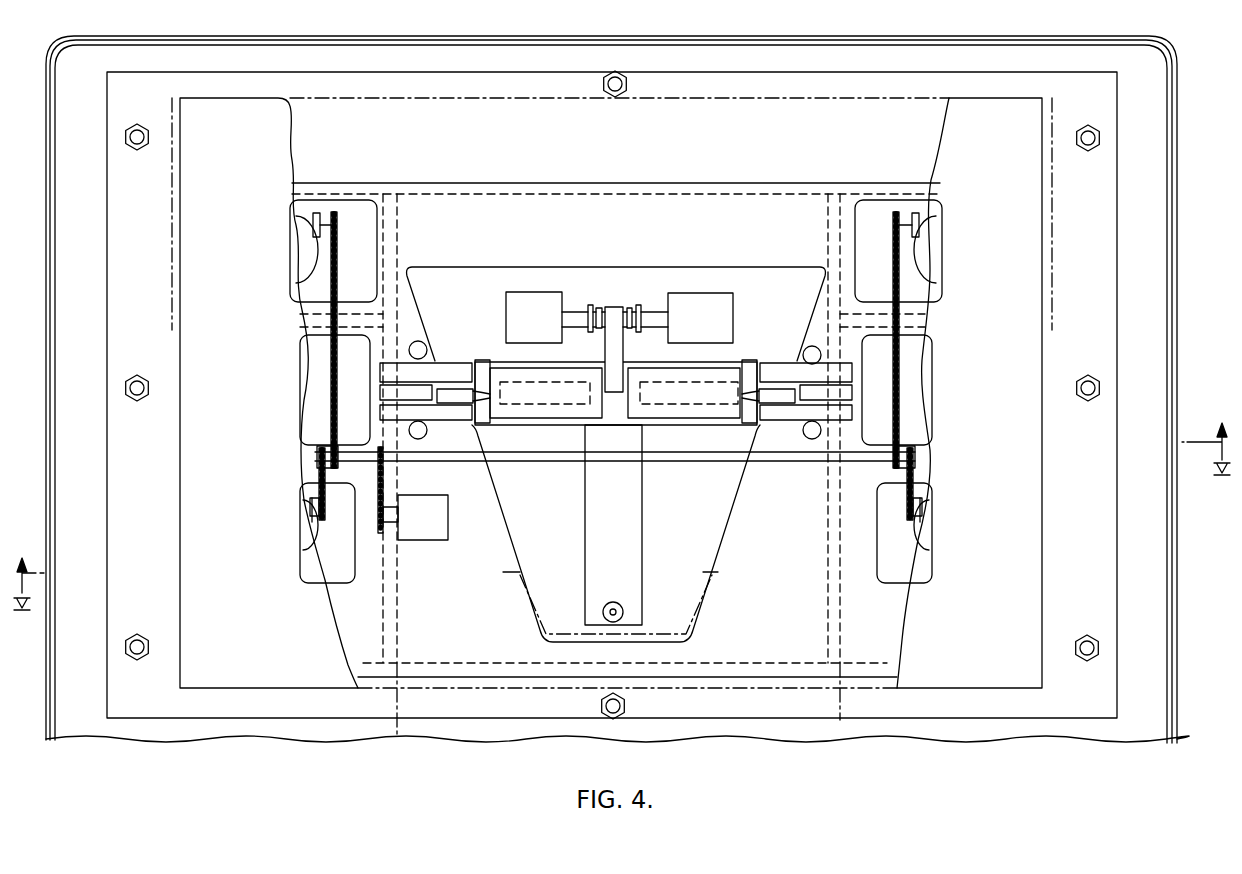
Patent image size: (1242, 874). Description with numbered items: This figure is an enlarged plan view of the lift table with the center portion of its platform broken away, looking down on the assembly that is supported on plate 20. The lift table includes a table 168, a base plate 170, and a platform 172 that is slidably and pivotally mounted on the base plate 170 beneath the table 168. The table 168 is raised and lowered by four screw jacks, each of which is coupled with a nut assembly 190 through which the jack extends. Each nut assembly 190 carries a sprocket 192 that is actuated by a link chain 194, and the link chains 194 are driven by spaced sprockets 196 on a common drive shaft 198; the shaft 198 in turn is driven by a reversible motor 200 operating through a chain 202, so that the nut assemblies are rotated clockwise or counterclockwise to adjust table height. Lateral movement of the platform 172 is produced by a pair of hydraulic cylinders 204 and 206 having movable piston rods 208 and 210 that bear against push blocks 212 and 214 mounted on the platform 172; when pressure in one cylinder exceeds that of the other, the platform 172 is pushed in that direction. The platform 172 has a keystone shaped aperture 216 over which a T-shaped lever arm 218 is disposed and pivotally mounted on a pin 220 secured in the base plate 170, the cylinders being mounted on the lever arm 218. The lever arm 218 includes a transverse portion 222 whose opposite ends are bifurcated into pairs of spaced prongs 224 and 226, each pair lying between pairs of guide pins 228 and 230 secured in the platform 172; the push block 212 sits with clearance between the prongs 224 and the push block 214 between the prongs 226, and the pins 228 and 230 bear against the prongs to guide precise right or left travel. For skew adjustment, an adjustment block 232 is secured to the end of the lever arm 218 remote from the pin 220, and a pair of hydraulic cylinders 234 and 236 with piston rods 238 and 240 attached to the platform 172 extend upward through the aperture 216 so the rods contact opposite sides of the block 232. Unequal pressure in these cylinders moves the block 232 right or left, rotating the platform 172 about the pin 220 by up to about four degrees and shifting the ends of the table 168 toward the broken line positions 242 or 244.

The plate 20 is at (1128, 263).
The table 168 is at (262, 112).
The base plate 170 is at (155, 77).
The platform 172 is at (420, 644).
The nut assembly 190 is at (316, 262).
The sprocket 192 is at (333, 214).
The link chain 194 is at (338, 276).
The sprocket 196 is at (334, 446).
The drive shaft 198 is at (558, 462).
The reversible motor 200 is at (408, 523).
The chain 202 is at (388, 534).
The hydraulic cylinder 204 is at (525, 404).
The hydraulic cylinder 206 is at (675, 404).
The piston rod 208 is at (463, 388).
The piston rod 210 is at (768, 388).
The push block 212 is at (405, 385).
The push block 214 is at (843, 394).
The keystone shaped aperture 216 is at (723, 541).
The T-shaped lever arm 218 is at (587, 536).
The pin 220 is at (612, 602).
The transverse portion 222 is at (710, 424).
The prongs 224 is at (446, 362).
The prongs 226 is at (783, 363).
The guide pins 228 is at (421, 342).
The guide pins 230 is at (808, 347).
The adjustment block 232 is at (614, 307).
The hydraulic cylinder 234 is at (539, 294).
The hydraulic cylinder 236 is at (708, 301).
The piston rod 238 is at (584, 311).
The piston rod 240 is at (652, 318).
The broken line position 242 is at (172, 192).
The broken line position 244 is at (1052, 215).